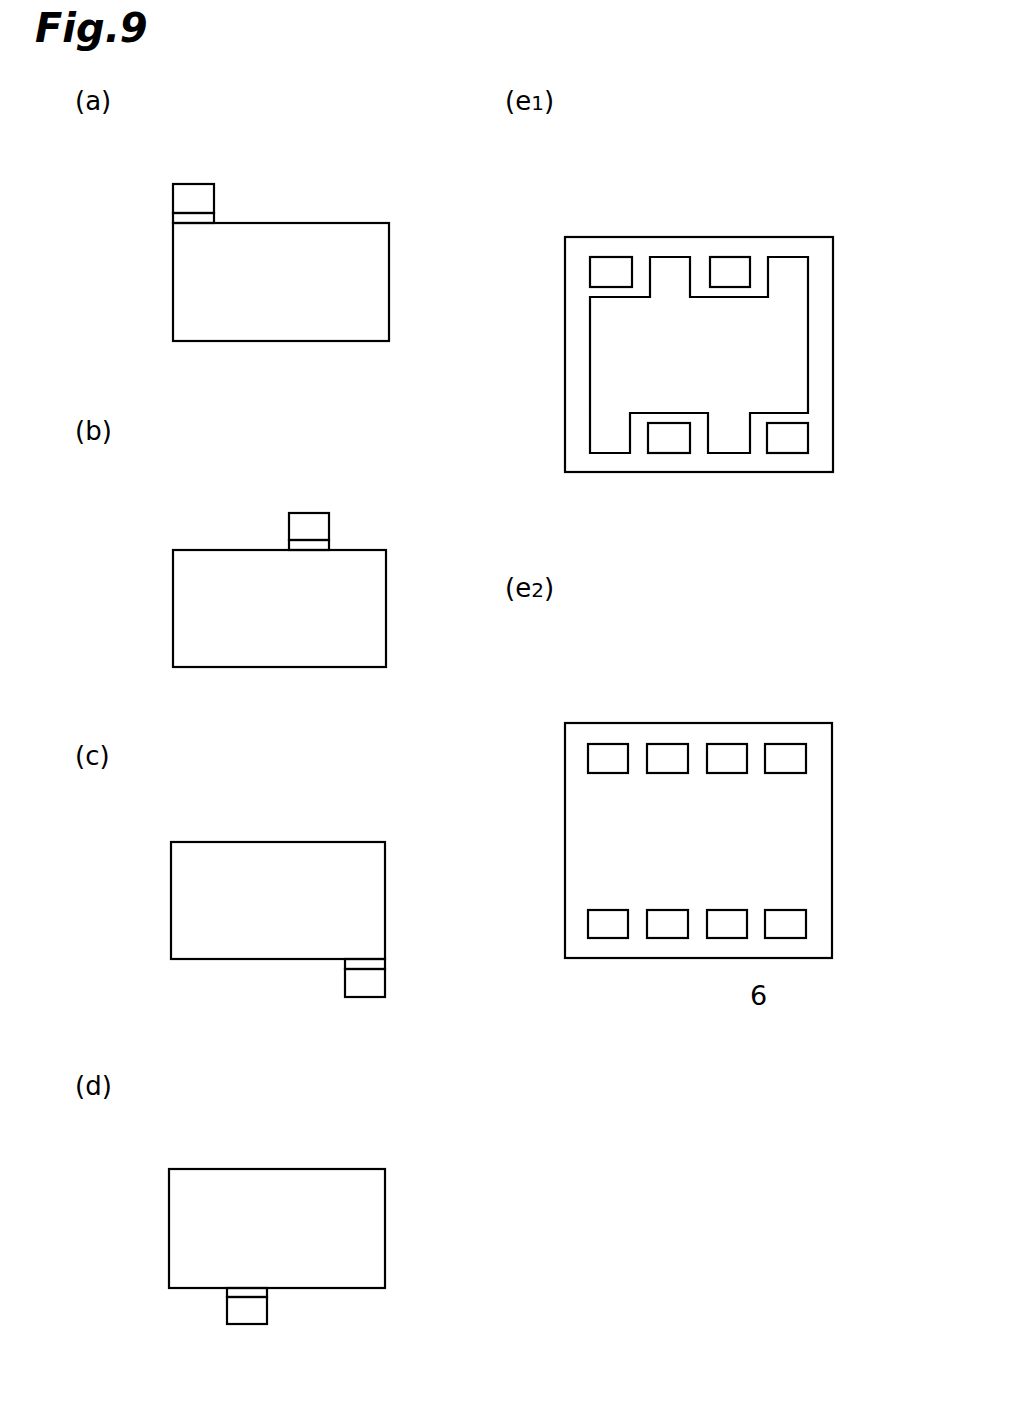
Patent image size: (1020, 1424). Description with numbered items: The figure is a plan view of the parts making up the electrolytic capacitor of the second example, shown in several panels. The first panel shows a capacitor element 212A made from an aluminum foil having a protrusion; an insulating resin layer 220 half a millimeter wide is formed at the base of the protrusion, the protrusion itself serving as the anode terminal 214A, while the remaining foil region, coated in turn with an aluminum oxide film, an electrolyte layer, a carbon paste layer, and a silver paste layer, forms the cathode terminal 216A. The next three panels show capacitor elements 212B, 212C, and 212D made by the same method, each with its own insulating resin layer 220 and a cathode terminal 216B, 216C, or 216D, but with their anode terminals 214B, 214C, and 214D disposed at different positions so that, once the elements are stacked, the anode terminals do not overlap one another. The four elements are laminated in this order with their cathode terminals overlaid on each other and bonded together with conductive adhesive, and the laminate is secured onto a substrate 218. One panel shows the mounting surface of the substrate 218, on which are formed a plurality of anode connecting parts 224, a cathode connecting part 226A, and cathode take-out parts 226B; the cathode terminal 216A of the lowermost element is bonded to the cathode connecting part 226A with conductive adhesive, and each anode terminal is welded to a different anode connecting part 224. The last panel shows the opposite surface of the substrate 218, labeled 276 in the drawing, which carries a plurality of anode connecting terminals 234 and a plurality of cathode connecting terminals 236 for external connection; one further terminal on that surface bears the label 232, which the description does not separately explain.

The capacitor element 212A is at (341, 160).
The capacitor element 212B is at (340, 486).
The capacitor element 212C is at (338, 833).
The capacitor element 212D is at (337, 1158).
The anode terminal 214A is at (186, 195).
The anode terminal 214B is at (320, 523).
The anode terminal 214C is at (380, 988).
The anode terminal 214D is at (231, 1312).
The cathode terminal 216A is at (377, 285).
The cathode terminal 216B is at (375, 612).
The cathode terminal 216C is at (373, 902).
The cathode terminal 216D is at (372, 1228).
The substrate 218 is at (775, 155).
The insulating resin layer 220 is at (186, 217).
The anode connecting part 224 is at (610, 265).
The cathode connecting part 226A is at (795, 352).
The cathode take-out part 226B is at (670, 265).
The land 232 is at (727, 930).
The anode connecting terminal 234 is at (608, 757).
The cathode connecting terminal 236 is at (668, 757).
The substrate 276 is at (795, 843).